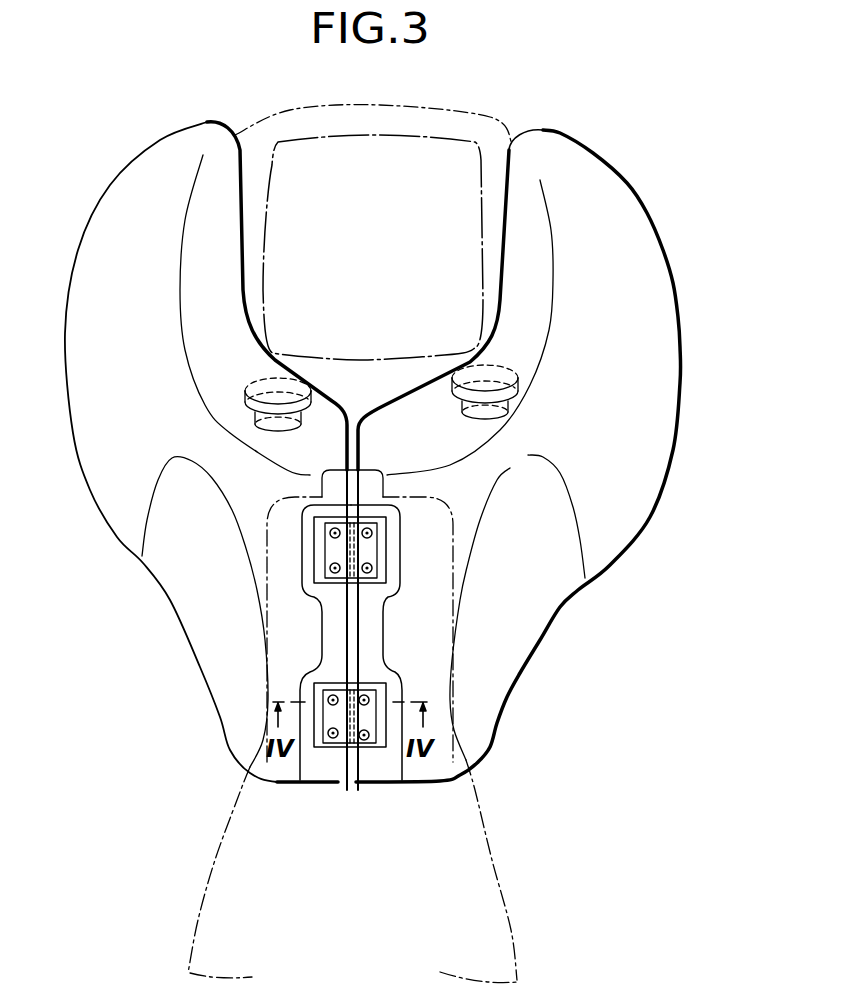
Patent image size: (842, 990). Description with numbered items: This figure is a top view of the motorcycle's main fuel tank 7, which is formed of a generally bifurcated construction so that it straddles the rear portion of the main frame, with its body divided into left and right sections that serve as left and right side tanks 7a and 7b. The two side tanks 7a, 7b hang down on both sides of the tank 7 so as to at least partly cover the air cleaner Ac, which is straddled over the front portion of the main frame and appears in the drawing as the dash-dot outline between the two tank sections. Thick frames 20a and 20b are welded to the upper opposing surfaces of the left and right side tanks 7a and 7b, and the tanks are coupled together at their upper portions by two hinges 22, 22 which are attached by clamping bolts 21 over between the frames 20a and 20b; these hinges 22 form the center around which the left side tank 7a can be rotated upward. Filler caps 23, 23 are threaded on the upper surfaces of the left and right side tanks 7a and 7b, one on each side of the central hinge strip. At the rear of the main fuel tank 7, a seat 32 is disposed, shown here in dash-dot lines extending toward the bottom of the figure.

The main fuel tank 7 is at (391, 456).
The left side tank 7a is at (97, 487).
The right side tank 7b is at (673, 384).
The air cleaner Ac is at (393, 137).
The filler cap 23 is at (262, 393).
The hinge 22 is at (370, 547).
The clamping bolt 21 is at (337, 574).
The thick frame 20a is at (335, 657).
The thick frame 20b is at (367, 648).
The seat 32 is at (493, 862).